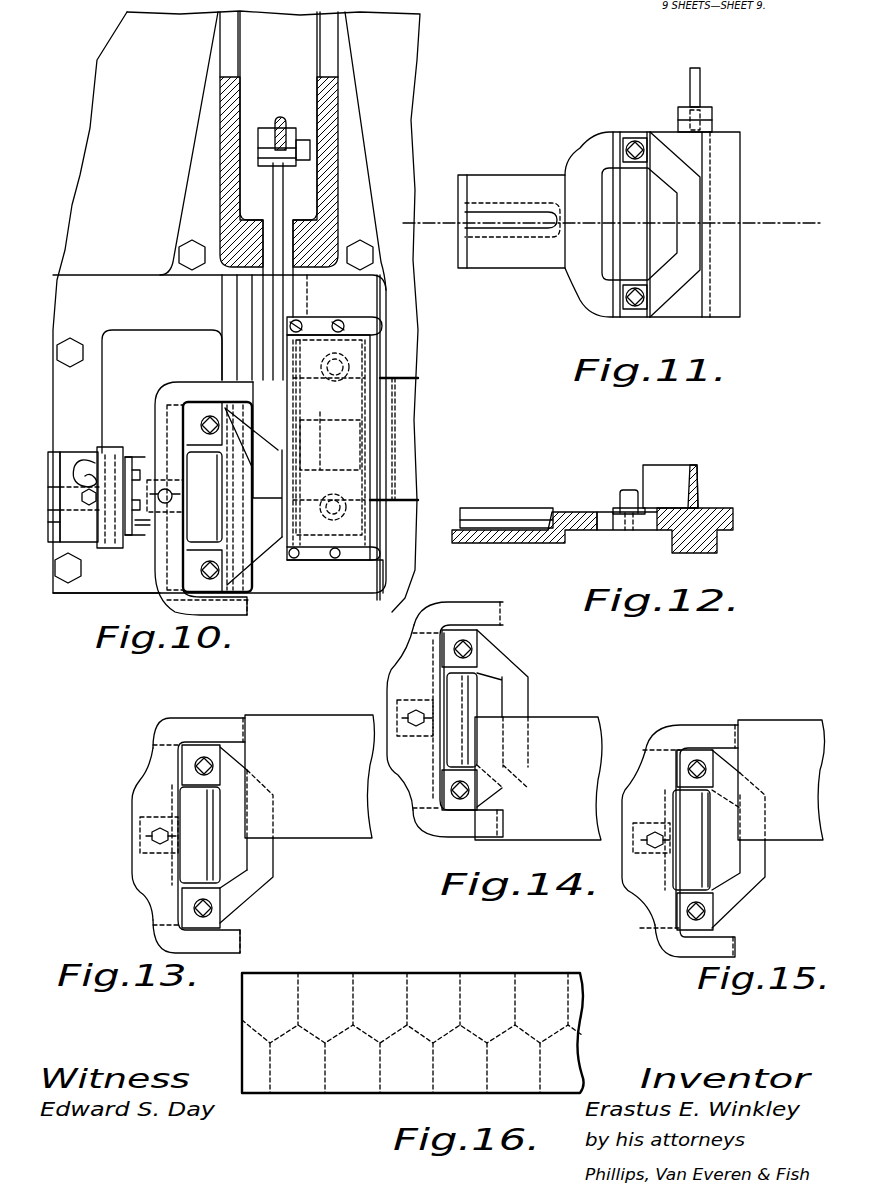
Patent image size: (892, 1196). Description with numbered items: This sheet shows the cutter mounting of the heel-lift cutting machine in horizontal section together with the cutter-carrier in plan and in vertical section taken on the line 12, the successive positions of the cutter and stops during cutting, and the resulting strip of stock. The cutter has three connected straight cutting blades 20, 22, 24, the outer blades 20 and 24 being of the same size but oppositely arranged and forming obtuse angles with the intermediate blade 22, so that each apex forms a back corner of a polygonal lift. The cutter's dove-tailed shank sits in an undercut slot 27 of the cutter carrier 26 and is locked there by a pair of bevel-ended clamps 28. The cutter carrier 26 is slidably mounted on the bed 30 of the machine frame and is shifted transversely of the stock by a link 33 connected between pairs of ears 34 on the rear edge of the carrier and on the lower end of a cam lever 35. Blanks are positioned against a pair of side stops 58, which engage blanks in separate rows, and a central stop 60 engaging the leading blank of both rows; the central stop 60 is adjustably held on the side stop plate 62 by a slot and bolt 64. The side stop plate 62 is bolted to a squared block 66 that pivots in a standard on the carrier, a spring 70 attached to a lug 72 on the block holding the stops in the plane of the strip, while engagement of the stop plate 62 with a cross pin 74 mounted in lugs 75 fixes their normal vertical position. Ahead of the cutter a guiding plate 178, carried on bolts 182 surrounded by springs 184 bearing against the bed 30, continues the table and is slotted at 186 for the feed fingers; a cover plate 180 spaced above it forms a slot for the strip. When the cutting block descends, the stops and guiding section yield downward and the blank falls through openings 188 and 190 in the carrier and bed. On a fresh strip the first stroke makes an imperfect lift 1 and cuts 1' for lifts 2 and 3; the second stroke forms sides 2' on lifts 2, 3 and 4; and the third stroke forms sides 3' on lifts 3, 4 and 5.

In FIG. 16, the imperfect lift 1 is at (252, 1066).
In FIG. 14, the cuts 1' is at (508, 800).
In FIG. 16, the cuts 1' is at (237, 1077).
In FIG. 16, the lift 2 is at (267, 1003).
In FIG. 15, the sides 2' is at (744, 787).
In FIG. 16, the sides 2' is at (294, 1010).
In FIG. 16, the lift 3 is at (292, 1066).
In FIG. 16, the sides 3' is at (330, 1085).
In FIG. 16, the lift 4 is at (325, 1018).
In FIG. 16, the lift 5 is at (352, 1066).
In FIG. 11, the section line 12 is at (613, 223).
In FIG. 11, the cutting blade 20 is at (681, 168).
In FIG. 12, the cutting blade 20 is at (674, 460).
In FIG. 14, the cutting blade 20 is at (506, 653).
In FIG. 10, the intermediate cutting blade 22 is at (253, 459).
In FIG. 11, the intermediate cutting blade 22 is at (701, 197).
In FIG. 12, the intermediate cutting blade 22 is at (699, 470).
In FIG. 13, the intermediate cutting blade 22 is at (273, 858).
In FIG. 14, the intermediate cutting blade 22 is at (533, 703).
In FIG. 10, the cutting blade 24 is at (258, 570).
In FIG. 11, the cutting blade 24 is at (672, 292).
In FIG. 13, the cutting blade 24 is at (251, 905).
In FIG. 14, the cutting blade 24 is at (510, 784).
In FIG. 15, the cutting blade 24 is at (741, 907).
In FIG. 10, the cutter carrier 26 is at (173, 388).
In FIG. 11, the cutter carrier 26 is at (578, 148).
In FIG. 12, the cutter carrier 26 is at (567, 512).
In FIG. 13, the cutter carrier 26 is at (150, 793).
In FIG. 12, the undercut slot 27 is at (613, 528).
In FIG. 11, the bevel-ended clamps 28 is at (635, 139).
In FIG. 12, the bevel-ended clamps 28 is at (621, 507).
In FIG. 10, the bed 30 is at (372, 302).
In FIG. 10, the link 33 is at (274, 192).
In FIG. 11, the link 33 is at (700, 80).
In FIG. 10, the ears 34 is at (292, 130).
In FIG. 11, the ears 34 is at (712, 112).
In FIG. 10, the cam lever 35 is at (279, 118).
In FIG. 10, the side stops 58 is at (248, 606).
In FIG. 13, the side stops 58 is at (244, 722).
In FIG. 14, the side stops 58 is at (500, 606).
In FIG. 15, the side stops 58 is at (737, 727).
In FIG. 10, the central stop 60 is at (217, 497).
In FIG. 13, the central stop 60 is at (222, 862).
In FIG. 14, the central stop 60 is at (478, 695).
In FIG. 15, the central stop 60 is at (711, 862).
In FIG. 10, the side stop plate 62 is at (192, 386).
In FIG. 13, the side stop plate 62 is at (140, 809).
In FIG. 14, the side stop plate 62 is at (396, 690).
In FIG. 15, the side stop plate 62 is at (637, 868).
In FIG. 10, the slot and bolt 64 is at (166, 489).
In FIG. 13, the slot and bolt 64 is at (148, 836).
In FIG. 15, the slot and bolt 64 is at (651, 845).
In FIG. 10, the squared block 66 is at (112, 520).
In FIG. 10, the spring 70 is at (85, 460).
In FIG. 10, the lug 72 is at (100, 453).
In FIG. 10, the cross pin 74 is at (142, 527).
In FIG. 10, the lugs 75 is at (134, 455).
In FIG. 10, the guiding plate 178 is at (372, 507).
In FIG. 10, the cover plate 180 is at (362, 400).
In FIG. 10, the bolts 182 is at (340, 362).
In FIG. 10, the springs 184 is at (350, 367).
In FIG. 10, the slot 186 is at (355, 440).
In FIG. 11, the opening 188 is at (639, 224).
In FIG. 10, the opening 190 is at (142, 325).